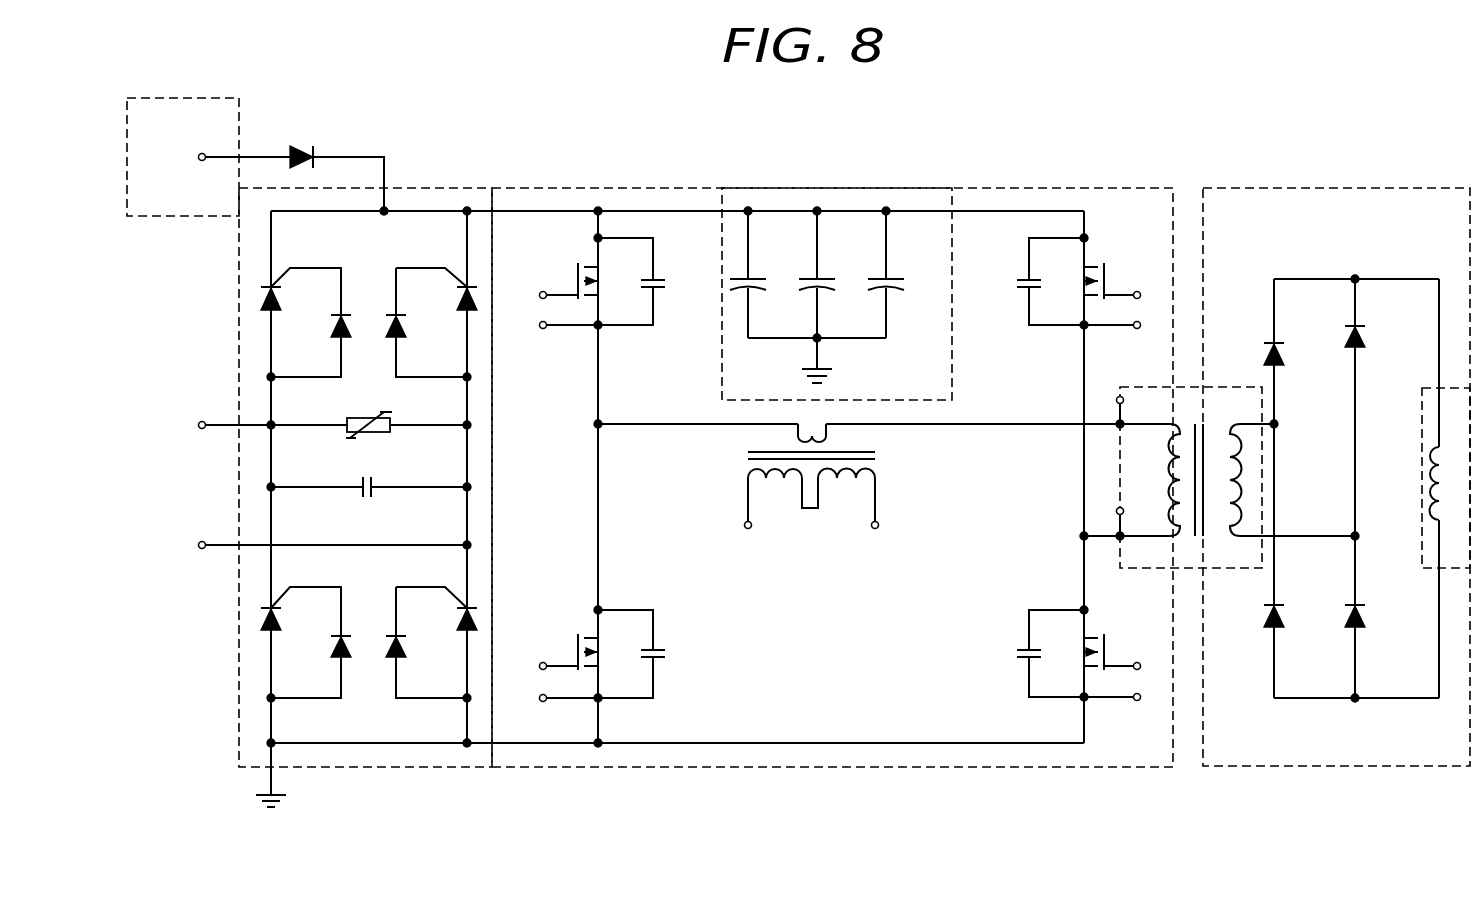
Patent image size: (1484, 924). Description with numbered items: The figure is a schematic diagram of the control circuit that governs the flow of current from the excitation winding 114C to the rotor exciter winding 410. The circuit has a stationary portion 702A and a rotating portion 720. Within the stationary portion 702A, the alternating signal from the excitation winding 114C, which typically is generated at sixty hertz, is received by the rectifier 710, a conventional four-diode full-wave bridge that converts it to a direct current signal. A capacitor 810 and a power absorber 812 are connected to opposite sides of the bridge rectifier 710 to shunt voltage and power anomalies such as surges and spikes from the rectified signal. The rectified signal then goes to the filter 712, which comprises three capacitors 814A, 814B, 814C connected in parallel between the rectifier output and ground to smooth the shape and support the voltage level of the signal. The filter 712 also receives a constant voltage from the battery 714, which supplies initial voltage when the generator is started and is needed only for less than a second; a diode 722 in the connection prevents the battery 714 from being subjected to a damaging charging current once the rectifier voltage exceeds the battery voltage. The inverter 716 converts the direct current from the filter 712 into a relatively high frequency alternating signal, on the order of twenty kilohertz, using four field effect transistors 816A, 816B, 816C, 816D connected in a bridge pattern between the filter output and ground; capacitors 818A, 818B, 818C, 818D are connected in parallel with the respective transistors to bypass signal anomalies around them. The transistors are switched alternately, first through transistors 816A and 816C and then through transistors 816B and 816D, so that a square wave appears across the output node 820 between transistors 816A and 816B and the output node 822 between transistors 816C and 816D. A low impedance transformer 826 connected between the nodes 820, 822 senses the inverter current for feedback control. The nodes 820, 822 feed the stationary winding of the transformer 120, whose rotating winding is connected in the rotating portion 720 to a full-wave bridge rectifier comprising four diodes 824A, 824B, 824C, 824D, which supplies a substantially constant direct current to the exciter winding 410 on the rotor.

The battery 714 is at (200, 97).
The diode 722 is at (305, 150).
The rectifier 710 is at (405, 769).
The inverter 716 is at (858, 769).
The stationary portion 702A is at (766, 186).
The filter 712 is at (890, 186).
The rotating portion 720 is at (1350, 186).
The excitation winding 114C is at (289, 485).
The power absorber 812 is at (383, 435).
The capacitor 810 is at (360, 493).
The field effect transistor 816A is at (576, 262).
The capacitor 818A is at (660, 282).
The field effect transistor 816B is at (576, 648).
The capacitor 818B is at (660, 652).
The field effect transistor 816C is at (1108, 650).
The capacitor 818C is at (1022, 652).
The field effect transistor 816D is at (1108, 266).
The capacitor 818D is at (1022, 282).
The capacitor 814A is at (754, 278).
The capacitor 814B is at (823, 278).
The capacitor 814C is at (892, 278).
The node 820 is at (596, 427).
The node 822 is at (1082, 538).
The transformer 826 is at (900, 462).
The transformer 120 is at (1216, 386).
The diode 824A is at (1282, 366).
The diode 824B is at (1280, 629).
The diode 824C is at (1362, 349).
The diode 824D is at (1362, 629).
The exciter winding 410 is at (1426, 387).